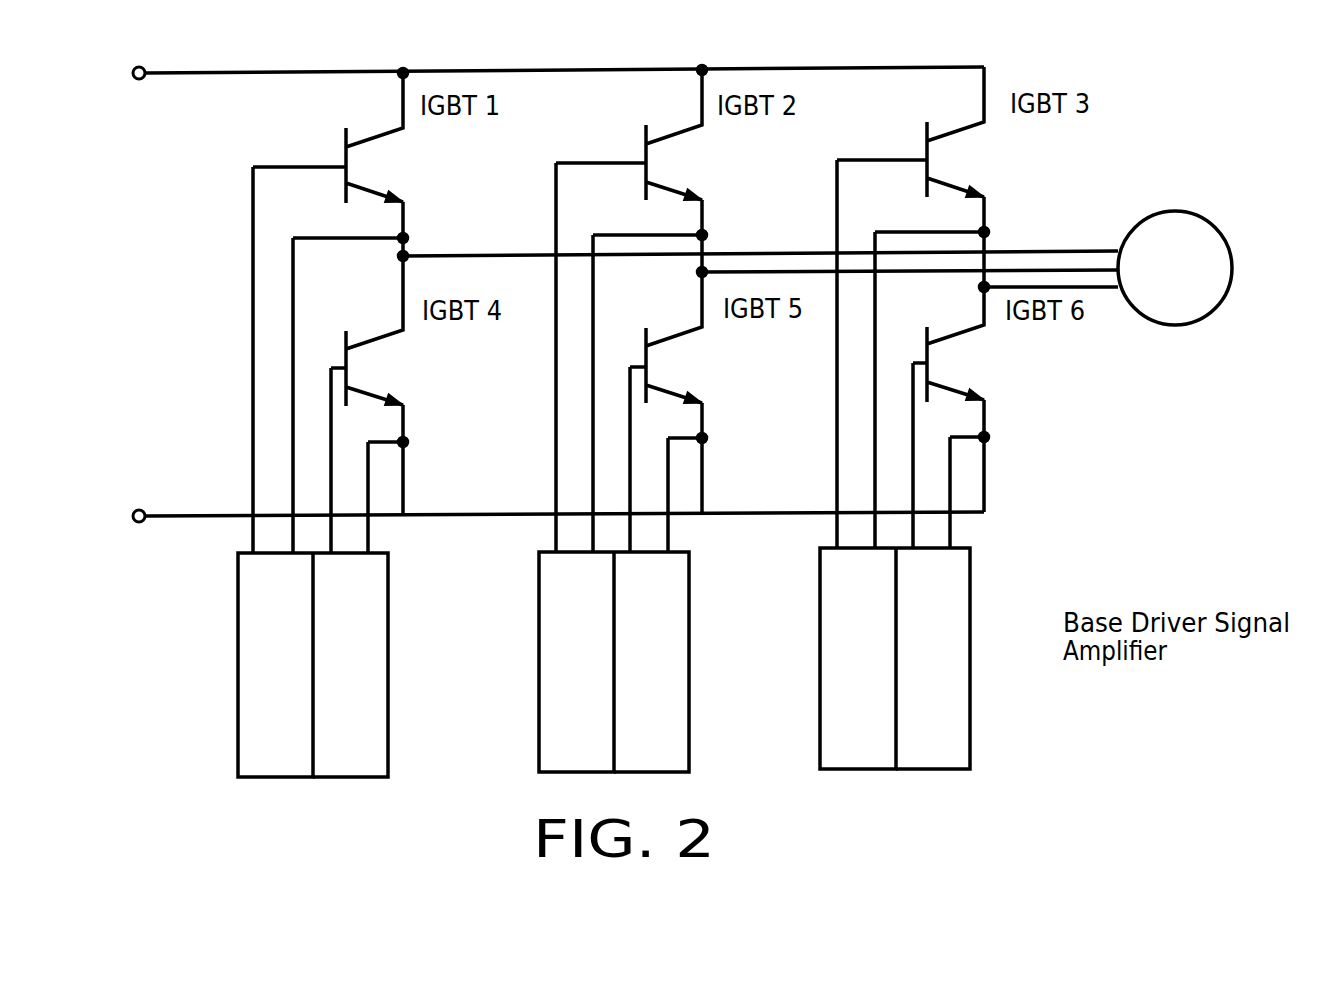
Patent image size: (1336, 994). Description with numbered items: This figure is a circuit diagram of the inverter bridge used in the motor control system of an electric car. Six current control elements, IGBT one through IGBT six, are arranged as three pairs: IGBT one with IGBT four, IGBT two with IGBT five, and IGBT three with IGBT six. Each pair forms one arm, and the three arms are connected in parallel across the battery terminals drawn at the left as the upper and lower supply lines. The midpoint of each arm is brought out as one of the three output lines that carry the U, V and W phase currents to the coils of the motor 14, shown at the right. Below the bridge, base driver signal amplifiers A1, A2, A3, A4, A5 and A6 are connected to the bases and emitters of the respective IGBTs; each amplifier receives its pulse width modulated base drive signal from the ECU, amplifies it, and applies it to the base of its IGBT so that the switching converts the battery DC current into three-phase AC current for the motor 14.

The motor 14 is at (1177, 211).
The base driver signal amplifier A1 is at (238, 702).
The base driver signal amplifier A2 is at (541, 670).
The base driver signal amplifier A3 is at (820, 663).
The base driver signal amplifier A4 is at (388, 638).
The base driver signal amplifier A5 is at (689, 655).
The base driver signal amplifier A6 is at (970, 713).